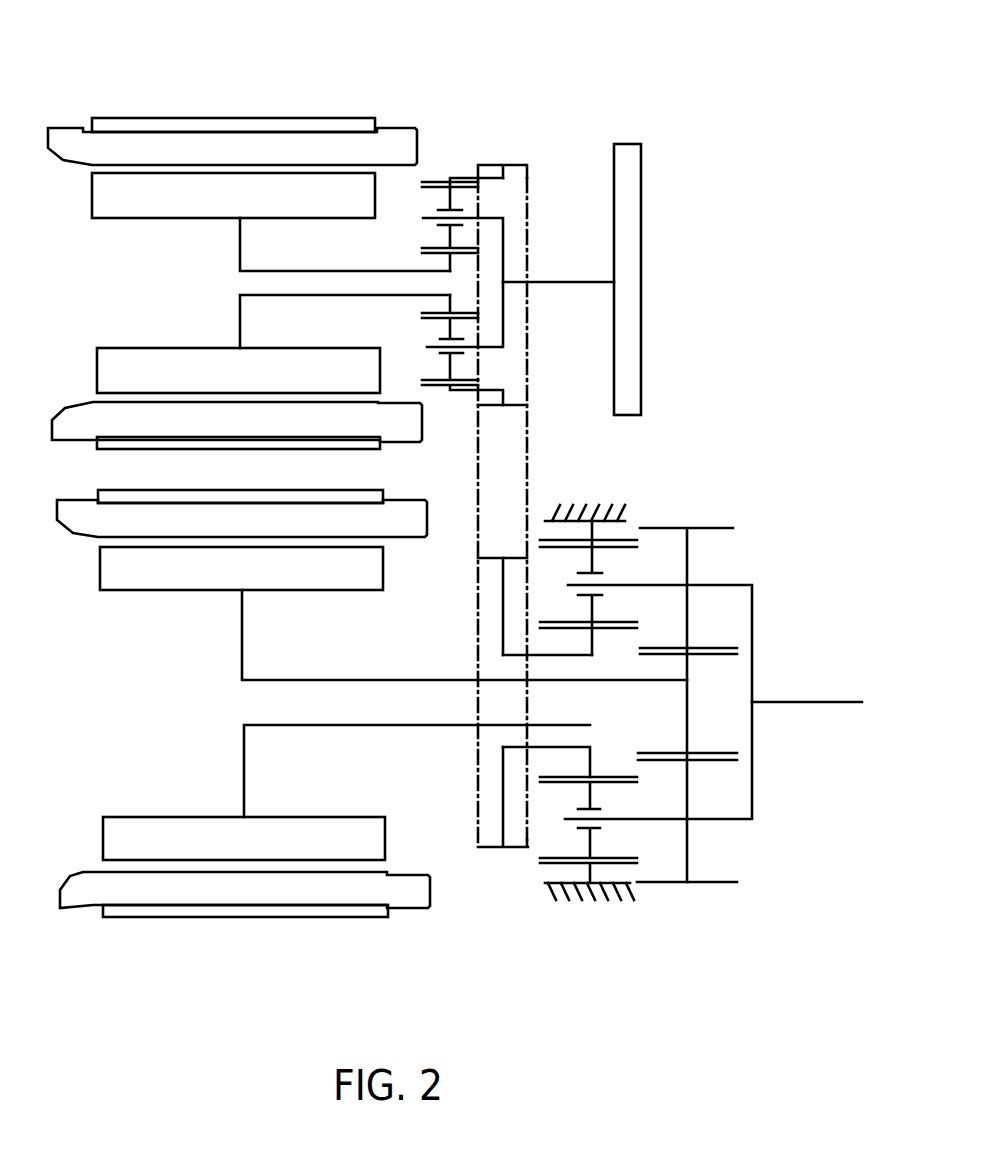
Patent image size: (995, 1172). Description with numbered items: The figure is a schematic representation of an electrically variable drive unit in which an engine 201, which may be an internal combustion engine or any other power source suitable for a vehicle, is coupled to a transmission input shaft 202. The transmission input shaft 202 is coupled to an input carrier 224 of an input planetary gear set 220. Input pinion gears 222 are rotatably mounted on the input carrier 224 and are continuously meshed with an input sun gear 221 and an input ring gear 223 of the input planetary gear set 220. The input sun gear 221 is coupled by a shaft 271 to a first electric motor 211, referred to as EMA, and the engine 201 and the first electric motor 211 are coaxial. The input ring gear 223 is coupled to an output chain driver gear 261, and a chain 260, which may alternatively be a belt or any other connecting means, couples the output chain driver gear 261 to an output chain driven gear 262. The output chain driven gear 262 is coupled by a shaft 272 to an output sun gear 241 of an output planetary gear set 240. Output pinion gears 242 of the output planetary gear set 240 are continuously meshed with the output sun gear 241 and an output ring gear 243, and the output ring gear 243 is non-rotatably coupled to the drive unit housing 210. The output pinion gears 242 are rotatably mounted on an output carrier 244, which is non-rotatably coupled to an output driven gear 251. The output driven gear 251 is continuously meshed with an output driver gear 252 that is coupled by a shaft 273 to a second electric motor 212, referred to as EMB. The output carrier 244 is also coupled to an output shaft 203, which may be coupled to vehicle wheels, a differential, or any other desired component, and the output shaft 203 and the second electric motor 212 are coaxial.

The engine 201 is at (643, 281).
The transmission input shaft 202 is at (580, 281).
The output shaft 203 is at (818, 702).
The drive unit housing 210 is at (584, 916).
The first electric motor 211 is at (62, 127).
The second electric motor 212 is at (70, 877).
The input planetary gear set 220 is at (498, 253).
The input sun gear 221 is at (455, 255).
The input pinion gears 222 is at (450, 207).
The input ring gear 223 is at (431, 182).
The input carrier 224 is at (508, 247).
The output planetary gear set 240 is at (642, 892).
The output sun gear 241 is at (608, 628).
The output pinion gears 242 is at (592, 550).
The output ring gear 243 is at (625, 540).
The output carrier 244 is at (755, 630).
The output driven gear 251 is at (730, 645).
The output driver gear 252 is at (657, 655).
The chain 260 is at (473, 427).
The output chain driver gear 261 is at (508, 165).
The output chain driven gear 262 is at (513, 557).
The shaft 271 is at (250, 295).
The shaft 272 is at (565, 745).
The shaft 273 is at (370, 682).